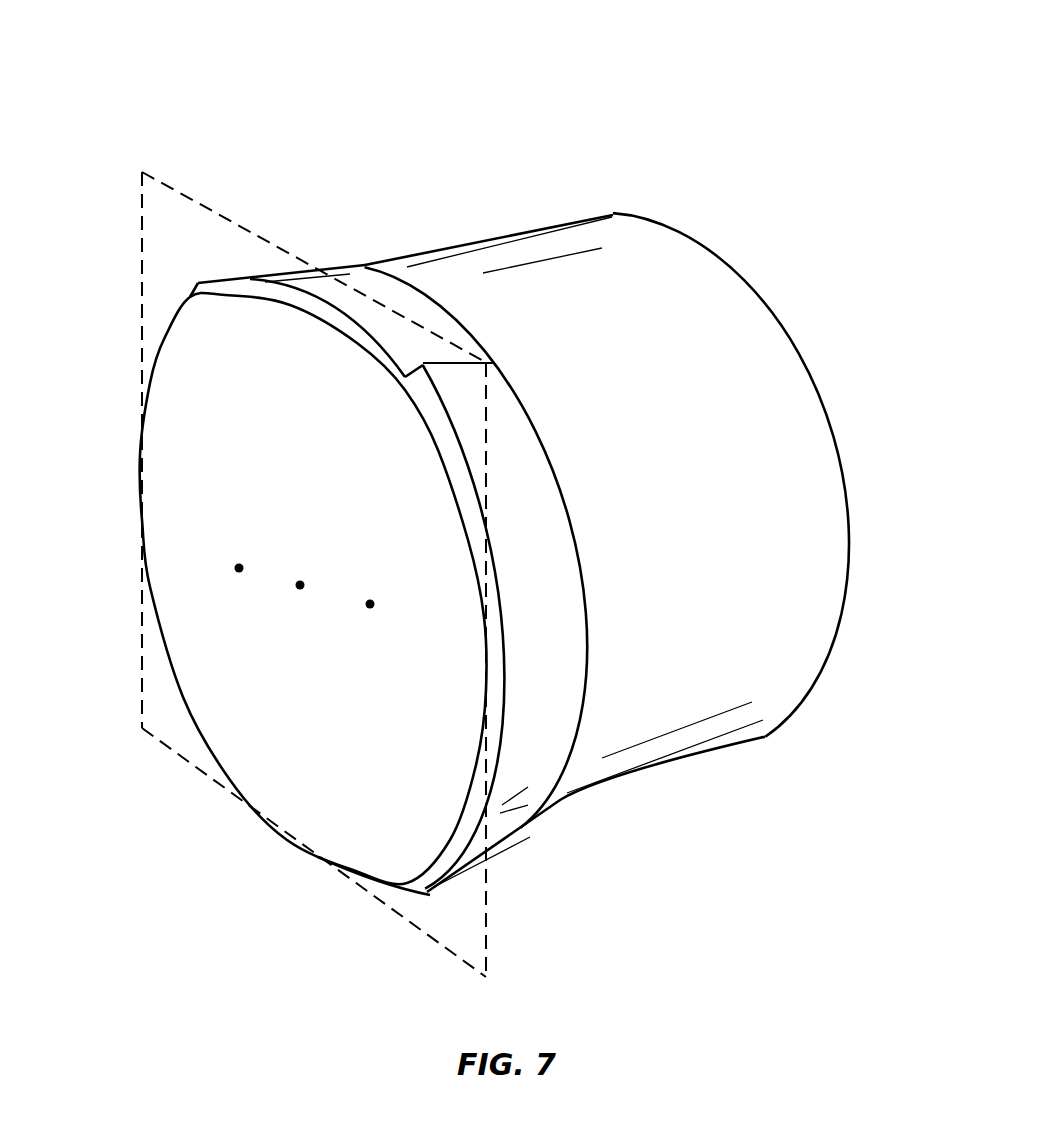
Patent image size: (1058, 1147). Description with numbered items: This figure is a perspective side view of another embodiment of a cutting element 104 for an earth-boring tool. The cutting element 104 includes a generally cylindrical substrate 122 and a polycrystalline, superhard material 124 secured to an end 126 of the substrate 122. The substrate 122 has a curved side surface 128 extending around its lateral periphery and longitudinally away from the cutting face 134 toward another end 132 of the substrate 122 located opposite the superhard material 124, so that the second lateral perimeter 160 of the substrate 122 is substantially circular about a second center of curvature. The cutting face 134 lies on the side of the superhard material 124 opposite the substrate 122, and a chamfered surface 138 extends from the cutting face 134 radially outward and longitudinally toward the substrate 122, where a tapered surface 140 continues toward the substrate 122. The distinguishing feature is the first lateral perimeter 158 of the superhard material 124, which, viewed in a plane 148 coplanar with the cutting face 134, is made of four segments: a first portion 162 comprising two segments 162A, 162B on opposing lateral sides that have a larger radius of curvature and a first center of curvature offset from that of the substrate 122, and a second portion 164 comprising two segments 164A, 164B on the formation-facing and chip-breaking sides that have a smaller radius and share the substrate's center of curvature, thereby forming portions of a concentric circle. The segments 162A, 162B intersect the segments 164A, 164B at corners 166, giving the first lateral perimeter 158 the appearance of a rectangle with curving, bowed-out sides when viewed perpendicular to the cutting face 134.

The cutting element 104 is at (275, 127).
The substrate 122 is at (628, 282).
The polycrystalline, superhard material 124 is at (297, 715).
The end of the substrate 126 is at (570, 770).
The curved side surface 128 is at (791, 475).
The another end of the substrate 132 is at (820, 397).
The cutting face 134 is at (185, 475).
The chamfered surface 138 is at (475, 827).
The tapered surface 140 is at (357, 284).
The plane 148 is at (177, 192).
The first lateral perimeter 158 is at (458, 485).
The second lateral perimeter 160 is at (720, 357).
The first portion 162 is at (379, 580).
The first segment 162A is at (148, 590).
The second segment 162B is at (477, 567).
The second portion 164 is at (314, 558).
The third segment 164A is at (285, 838).
The fourth segment 164B is at (316, 291).
The corners 166 is at (423, 363).